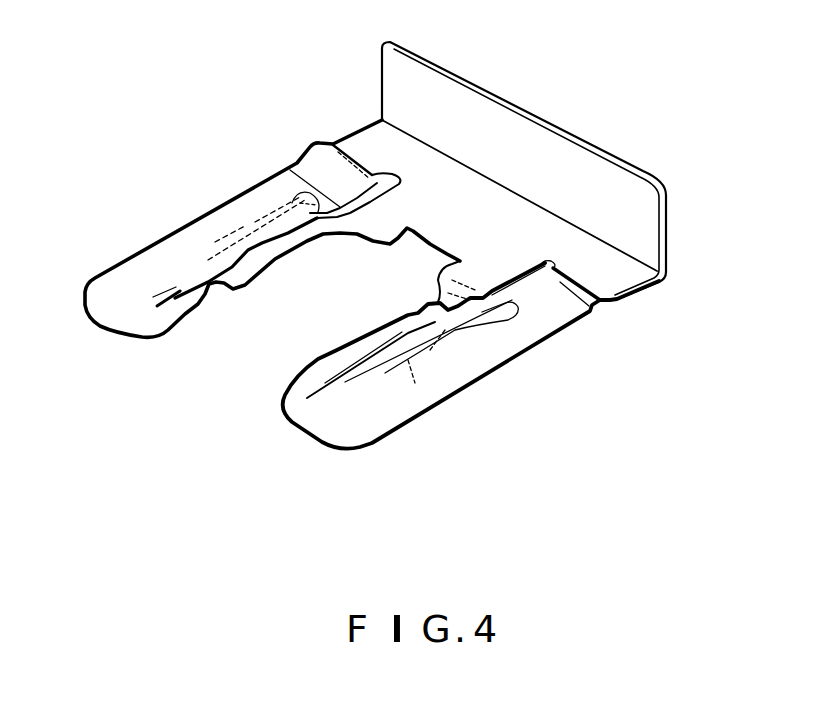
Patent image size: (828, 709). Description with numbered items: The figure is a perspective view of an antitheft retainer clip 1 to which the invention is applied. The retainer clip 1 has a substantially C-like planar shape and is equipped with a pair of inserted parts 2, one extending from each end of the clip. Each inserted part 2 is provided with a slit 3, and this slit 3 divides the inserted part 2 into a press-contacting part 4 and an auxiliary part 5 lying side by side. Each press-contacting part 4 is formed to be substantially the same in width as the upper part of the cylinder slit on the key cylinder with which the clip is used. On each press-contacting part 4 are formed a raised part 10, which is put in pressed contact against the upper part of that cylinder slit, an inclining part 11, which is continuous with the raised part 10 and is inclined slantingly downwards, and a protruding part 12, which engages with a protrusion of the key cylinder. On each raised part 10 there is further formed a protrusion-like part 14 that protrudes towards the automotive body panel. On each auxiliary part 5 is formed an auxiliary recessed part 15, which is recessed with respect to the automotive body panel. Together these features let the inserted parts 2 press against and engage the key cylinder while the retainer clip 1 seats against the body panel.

The retainer clip 1 is at (572, 98).
The inserted part 2 is at (491, 383).
The slit 3 is at (347, 380).
The press-contacting part 4 is at (188, 330).
The auxiliary part 5 is at (415, 390).
The raised part 10 is at (260, 243).
The inclining part 11 is at (166, 300).
The protruding part 12 is at (205, 275).
The protrusion-like part 14 is at (425, 312).
The auxiliary recessed part 15 is at (548, 347).